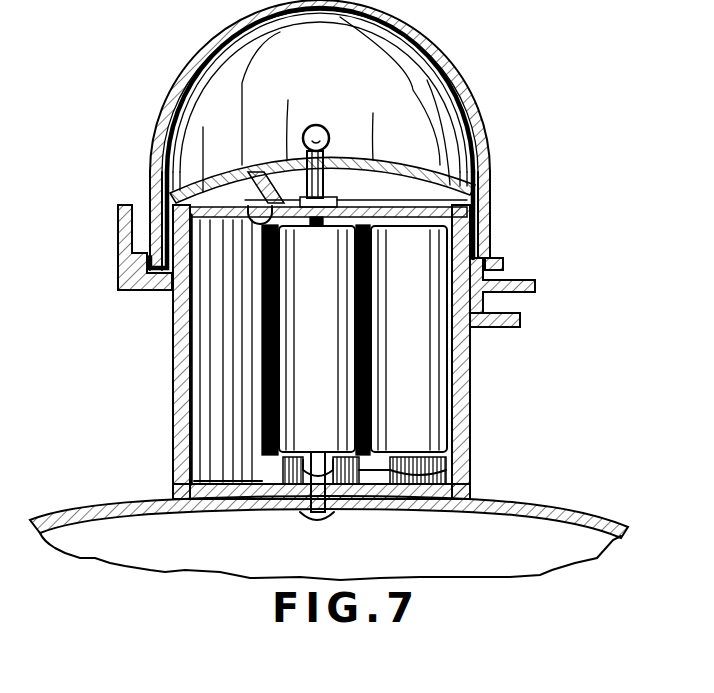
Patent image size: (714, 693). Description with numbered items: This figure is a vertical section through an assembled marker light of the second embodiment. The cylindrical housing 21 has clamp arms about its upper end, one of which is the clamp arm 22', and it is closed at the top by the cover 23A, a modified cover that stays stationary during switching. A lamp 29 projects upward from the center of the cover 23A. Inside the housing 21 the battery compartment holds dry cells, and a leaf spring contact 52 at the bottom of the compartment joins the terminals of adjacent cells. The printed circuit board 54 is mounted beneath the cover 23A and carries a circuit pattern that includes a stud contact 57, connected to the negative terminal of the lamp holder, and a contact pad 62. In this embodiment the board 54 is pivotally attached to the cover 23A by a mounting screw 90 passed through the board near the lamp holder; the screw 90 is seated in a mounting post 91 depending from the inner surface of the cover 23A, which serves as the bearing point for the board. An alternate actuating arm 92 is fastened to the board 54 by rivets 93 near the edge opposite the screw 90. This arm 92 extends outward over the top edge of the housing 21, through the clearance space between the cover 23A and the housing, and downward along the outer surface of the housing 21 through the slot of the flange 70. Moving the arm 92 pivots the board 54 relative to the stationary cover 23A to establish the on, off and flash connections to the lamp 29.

The cylindrical housing 21 is at (470, 430).
The clamp arm 22' is at (98, 247).
The cover 23A is at (266, 142).
The lamp 29 is at (316, 124).
The leaf spring contact 52 is at (440, 478).
The printed circuit board 54 is at (440, 174).
The stud contact 57 is at (470, 350).
The contact pad 62 is at (405, 182).
The flange 70 is at (517, 282).
The mounting screw 90 is at (250, 226).
The mounting post 91 is at (235, 173).
The alternate actuating arm 92 is at (522, 318).
The rivets 93 is at (445, 186).